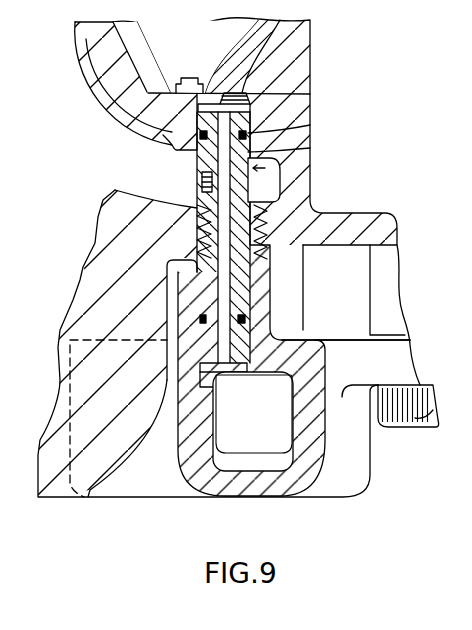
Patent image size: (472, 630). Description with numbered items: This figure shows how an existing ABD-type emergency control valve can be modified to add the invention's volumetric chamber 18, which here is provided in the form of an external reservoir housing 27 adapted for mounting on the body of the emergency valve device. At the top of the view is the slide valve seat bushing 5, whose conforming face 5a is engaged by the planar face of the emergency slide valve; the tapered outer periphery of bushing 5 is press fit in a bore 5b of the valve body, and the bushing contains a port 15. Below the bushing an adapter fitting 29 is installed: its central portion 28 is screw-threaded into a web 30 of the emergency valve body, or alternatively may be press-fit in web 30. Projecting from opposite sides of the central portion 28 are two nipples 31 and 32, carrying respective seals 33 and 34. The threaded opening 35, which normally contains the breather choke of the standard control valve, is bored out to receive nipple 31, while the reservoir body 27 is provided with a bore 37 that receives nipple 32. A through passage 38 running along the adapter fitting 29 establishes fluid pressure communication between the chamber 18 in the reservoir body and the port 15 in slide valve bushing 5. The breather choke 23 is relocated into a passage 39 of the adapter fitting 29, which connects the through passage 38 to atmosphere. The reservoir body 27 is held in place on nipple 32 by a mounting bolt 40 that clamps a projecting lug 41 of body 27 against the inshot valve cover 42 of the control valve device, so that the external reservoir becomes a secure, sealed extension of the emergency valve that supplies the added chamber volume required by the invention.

The slide valve seat bushing 5 is at (128, 58).
The conforming face 5a is at (183, 78).
The bore 5b is at (113, 40).
The port 15 is at (165, 140).
The threaded opening 35 is at (305, 96).
The seal 33 is at (305, 126).
The nipple 31 is at (305, 148).
The adapter fitting 29 is at (298, 170).
The web 30 is at (312, 200).
The passage 39 is at (197, 160).
The breather choke 23 is at (202, 186).
The through passage 38 is at (197, 222).
The central portion 28 is at (197, 245).
The bore 37 is at (173, 296).
The nipple 32 is at (243, 294).
The seal 34 is at (248, 320).
The inshot valve cover 42 is at (388, 280).
The projecting lug 41 is at (403, 364).
The mounting bolt 40 is at (423, 417).
The chamber 18 is at (268, 428).
The reservoir housing 27 is at (203, 482).